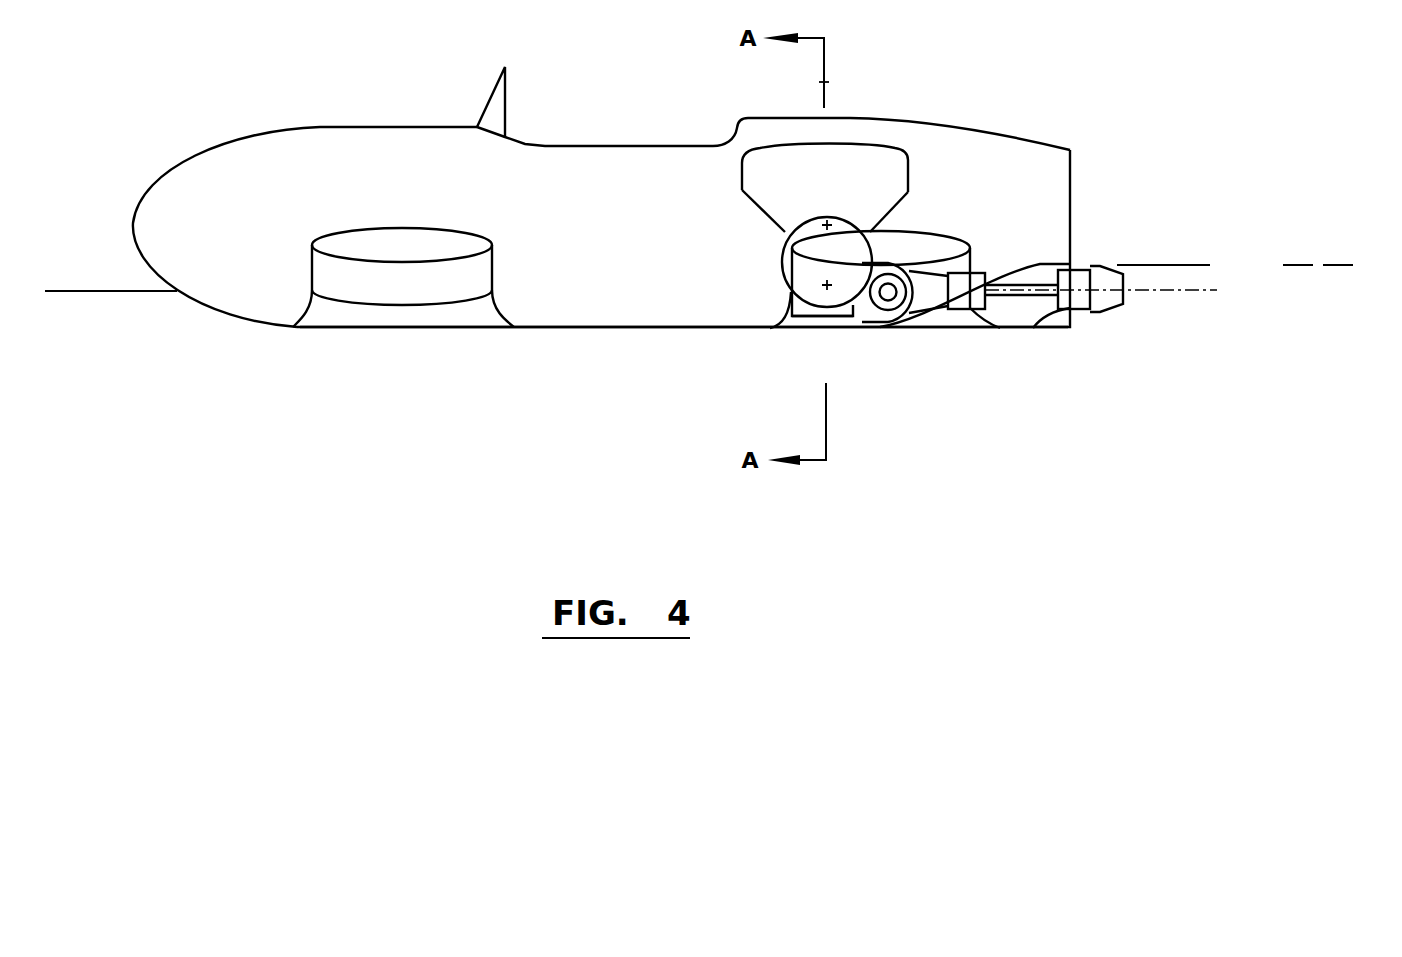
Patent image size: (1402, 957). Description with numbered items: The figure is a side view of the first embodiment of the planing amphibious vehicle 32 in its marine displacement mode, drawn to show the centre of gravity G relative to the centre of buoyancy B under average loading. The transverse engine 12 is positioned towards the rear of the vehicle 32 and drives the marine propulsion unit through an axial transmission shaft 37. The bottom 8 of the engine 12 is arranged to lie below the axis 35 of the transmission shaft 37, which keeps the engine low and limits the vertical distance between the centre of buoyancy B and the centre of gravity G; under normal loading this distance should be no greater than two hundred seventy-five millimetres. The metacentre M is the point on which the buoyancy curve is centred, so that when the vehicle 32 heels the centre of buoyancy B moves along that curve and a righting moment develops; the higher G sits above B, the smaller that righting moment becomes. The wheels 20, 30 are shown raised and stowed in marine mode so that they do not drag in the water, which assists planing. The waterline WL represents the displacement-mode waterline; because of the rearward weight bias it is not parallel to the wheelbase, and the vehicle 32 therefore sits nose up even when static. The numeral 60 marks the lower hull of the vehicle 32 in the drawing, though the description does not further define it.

The bottom of the engine 8 is at (822, 318).
The transverse engine 12 is at (842, 190).
The wheels 20 is at (383, 288).
The rear wheels 30 is at (912, 240).
The planing amphibious vehicle 32 is at (653, 342).
The axis of axial transmission shaft 35 is at (1197, 292).
The shaft 37 is at (1018, 286).
The hull bottom 60 is at (567, 328).
The centre of gravity G is at (870, 230).
The centre of buoyancy B is at (828, 285).
The metacentre M is at (824, 82).
The waterline in displacement mode WL is at (1240, 268).